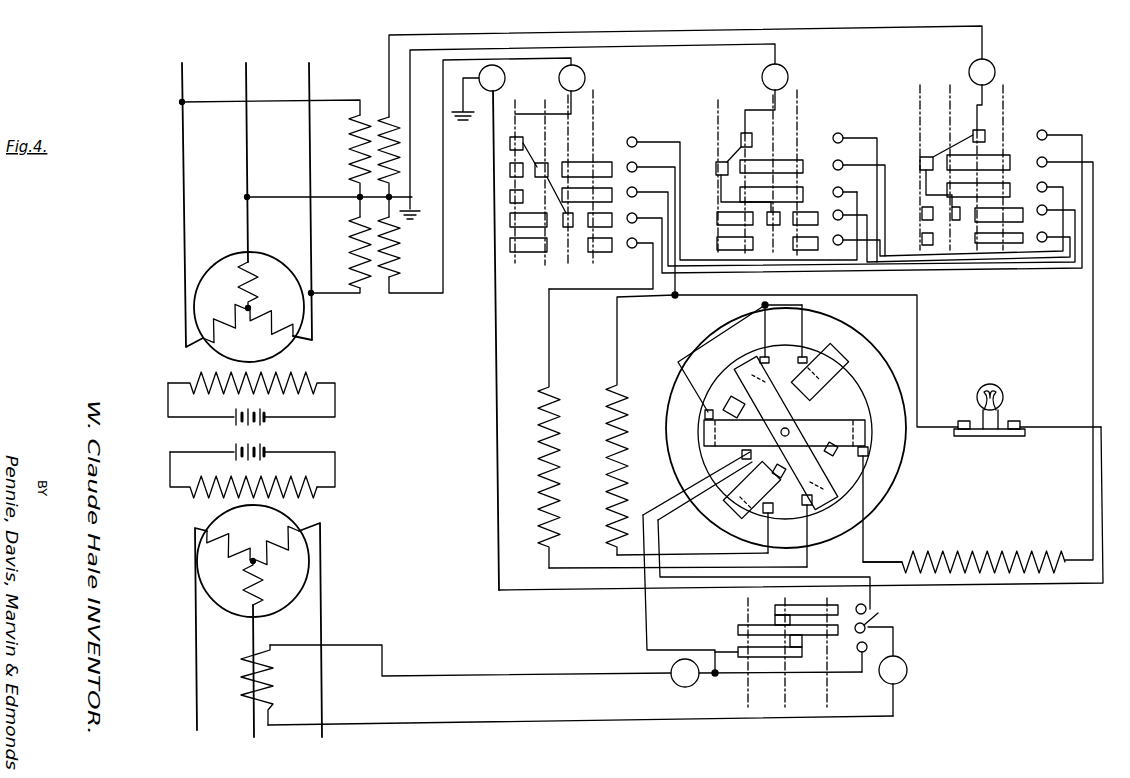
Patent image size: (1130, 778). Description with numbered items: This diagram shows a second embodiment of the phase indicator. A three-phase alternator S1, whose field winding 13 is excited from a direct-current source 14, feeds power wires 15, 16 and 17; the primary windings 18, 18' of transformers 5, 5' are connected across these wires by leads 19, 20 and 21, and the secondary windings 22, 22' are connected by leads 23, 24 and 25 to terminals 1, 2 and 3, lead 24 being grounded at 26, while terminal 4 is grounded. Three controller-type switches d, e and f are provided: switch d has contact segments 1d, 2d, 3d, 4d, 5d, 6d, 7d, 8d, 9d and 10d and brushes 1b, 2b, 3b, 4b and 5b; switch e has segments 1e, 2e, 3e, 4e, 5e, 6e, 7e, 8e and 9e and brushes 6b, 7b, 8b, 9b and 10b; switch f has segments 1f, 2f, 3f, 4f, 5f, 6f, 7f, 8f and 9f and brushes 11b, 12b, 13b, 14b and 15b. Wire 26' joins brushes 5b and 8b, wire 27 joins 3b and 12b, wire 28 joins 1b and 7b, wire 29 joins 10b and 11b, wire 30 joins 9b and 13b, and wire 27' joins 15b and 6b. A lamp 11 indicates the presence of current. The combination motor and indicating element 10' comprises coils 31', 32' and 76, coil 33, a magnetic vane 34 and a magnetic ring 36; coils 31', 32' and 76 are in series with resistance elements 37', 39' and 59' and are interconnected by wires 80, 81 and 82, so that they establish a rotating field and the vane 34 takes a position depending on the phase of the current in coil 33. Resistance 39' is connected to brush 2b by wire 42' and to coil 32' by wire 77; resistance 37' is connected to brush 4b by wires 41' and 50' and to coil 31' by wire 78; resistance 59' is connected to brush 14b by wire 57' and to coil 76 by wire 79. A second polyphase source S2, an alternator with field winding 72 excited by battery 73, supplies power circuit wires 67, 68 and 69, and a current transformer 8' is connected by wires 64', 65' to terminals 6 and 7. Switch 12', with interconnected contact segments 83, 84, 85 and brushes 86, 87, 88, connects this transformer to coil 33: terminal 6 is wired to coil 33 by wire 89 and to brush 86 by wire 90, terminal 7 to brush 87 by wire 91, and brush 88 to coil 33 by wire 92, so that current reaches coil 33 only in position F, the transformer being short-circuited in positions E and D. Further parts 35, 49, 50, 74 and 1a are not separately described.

The terminal 1 is at (582, 73).
The terminal 2 is at (784, 70).
The terminal 3 is at (990, 64).
The grounded terminal 4 is at (500, 85).
The transformer 5 is at (391, 305).
The transformer 5' is at (360, 83).
The terminal 6 is at (675, 678).
The terminal 7 is at (908, 670).
The current transformer 8' is at (243, 688).
The combination motor and indicating element 10' is at (672, 497).
The incandescent lamp 11 is at (988, 440).
The switch 12' is at (747, 654).
The field winding 13 is at (186, 373).
The direct current source 14 is at (232, 420).
The power wire 15 is at (182, 150).
The power wire 16 is at (247, 150).
The power wire 17 is at (310, 150).
The primary winding 18 is at (345, 252).
The primary winding 18' is at (345, 166).
The lead 19 is at (262, 102).
The lead 20 is at (290, 192).
The lead 21 is at (340, 296).
The secondary winding 22 is at (404, 247).
The secondary winding 22' is at (407, 167).
The lead 23 is at (468, 57).
The lead 24 is at (548, 48).
The lead 25 is at (598, 33).
The ground connection 26 is at (417, 193).
The wire 26' is at (785, 283).
The wire 27 is at (683, 190).
The wire 27' is at (1073, 292).
The wire 28 is at (855, 272).
The wire 29 is at (958, 268).
The wire 30 is at (1035, 266).
The coil 31' is at (751, 507).
The coil 32' is at (821, 531).
The coil 33 is at (778, 476).
The magnetic vane 34 is at (836, 455).
The rotor 35 is at (782, 432).
The magnetic ring 36 is at (860, 346).
The resistance element 37' is at (640, 425).
The resistance element 39' is at (532, 428).
The wire 41' is at (597, 340).
The wire 42' is at (576, 306).
The conductor 49 is at (728, 298).
The conductor 50 is at (694, 135).
The wire 50' is at (659, 309).
The wire 57' is at (1070, 357).
The resistance element 59' is at (964, 553).
The wire 64' is at (470, 657).
The wire 65' is at (580, 708).
The wire 67 is at (250, 635).
The wire 68 is at (322, 690).
The wire 69 is at (195, 690).
The field winding 72 is at (192, 492).
The battery 73 is at (270, 448).
The conductor 74 is at (1100, 484).
The coil 76 is at (835, 415).
The wire 77 is at (563, 569).
The wire 78 is at (694, 556).
The wire 79 is at (867, 530).
The wire 80 is at (697, 337).
The wire 81 is at (765, 333).
The wire 82 is at (803, 333).
The contact segment 83 is at (740, 652).
The contact segment 84 is at (738, 630).
The contact segment 85 is at (792, 608).
The brush 86 is at (867, 647).
The brush 87 is at (876, 622).
The brush 88 is at (854, 602).
The wire 89 is at (645, 640).
The wire 90 is at (846, 683).
The wire 91 is at (895, 638).
The wire 92 is at (820, 577).
The contact segment 1d is at (510, 143).
The contact segment 10d is at (510, 170).
The contact segment 9d is at (510, 195).
The contact segment 7d is at (510, 219).
The contact segment 6d is at (510, 246).
The contact segment 8d is at (550, 163).
The contact segment 4d is at (578, 162).
The contact segment 3d is at (613, 188).
The contact segment 5d is at (568, 228).
The contact 1a is at (600, 252).
The contact segment 2d is at (603, 252).
The brush 5b is at (636, 138).
The brush 4b is at (637, 165).
The brush 3b is at (637, 190).
The brush 2b is at (637, 215).
The brush 1b is at (637, 240).
The contact segment 8e is at (752, 140).
The contact segment 9e is at (715, 170).
The contact segment 4e is at (785, 160).
The contact segment 3e is at (798, 194).
The contact segment 7e is at (717, 218).
The contact segment 6e is at (717, 242).
The contact segment 5e is at (770, 226).
The contact segment 2e is at (812, 212).
The contact segment 1e is at (808, 250).
The brush 10b is at (844, 134).
The brush 9b is at (844, 162).
The brush 8b is at (844, 189).
The brush 7b is at (844, 212).
The brush 6b is at (842, 245).
The contact segment 8f is at (973, 133).
The contact segment 9f is at (920, 162).
The contact segment 4f is at (1008, 158).
The contact segment 3f is at (1005, 188).
The contact segment 7f is at (922, 213).
The contact segment 6f is at (922, 240).
The contact segment 5f is at (953, 222).
The contact segment 2f is at (1018, 212).
The contact segment 1f is at (1020, 238).
The brush 15b is at (1046, 131).
The brush 14b is at (1047, 159).
The brush 13b is at (1047, 184).
The brush 12b is at (1047, 207).
The brush 11b is at (1047, 234).
The source of polyphase current S1 is at (223, 307).
The source of polyphase current S2 is at (227, 561).
The switch d is at (614, 110).
The switch e is at (818, 122).
The switch f is at (1022, 118).